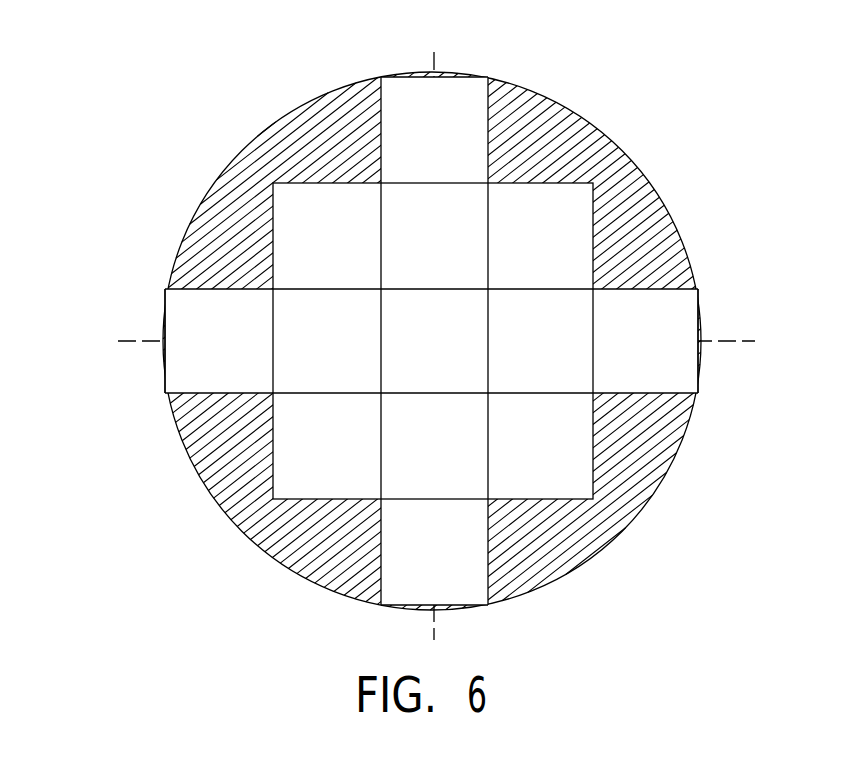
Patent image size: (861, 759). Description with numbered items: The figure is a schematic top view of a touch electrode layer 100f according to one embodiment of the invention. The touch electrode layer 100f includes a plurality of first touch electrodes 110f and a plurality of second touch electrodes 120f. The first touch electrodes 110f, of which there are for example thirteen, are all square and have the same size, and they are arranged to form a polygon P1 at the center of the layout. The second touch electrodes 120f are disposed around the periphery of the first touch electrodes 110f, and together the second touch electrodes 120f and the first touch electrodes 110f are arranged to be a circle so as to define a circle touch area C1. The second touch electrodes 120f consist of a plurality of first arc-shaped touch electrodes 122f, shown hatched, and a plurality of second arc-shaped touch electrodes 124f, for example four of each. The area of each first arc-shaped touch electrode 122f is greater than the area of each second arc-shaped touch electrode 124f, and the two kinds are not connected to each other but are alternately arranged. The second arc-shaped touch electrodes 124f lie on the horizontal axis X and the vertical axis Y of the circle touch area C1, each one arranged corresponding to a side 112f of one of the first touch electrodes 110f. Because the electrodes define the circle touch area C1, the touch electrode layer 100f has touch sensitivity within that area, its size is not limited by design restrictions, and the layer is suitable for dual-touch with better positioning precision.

The touch electrode layer 100f is at (416, 338).
The first touch electrodes 110f is at (660, 311).
The side 112f is at (161, 321).
The second touch electrodes 120f is at (392, 329).
The first arc-shaped touch electrodes 122f is at (393, 332).
The second arc-shaped touch electrodes 124f is at (462, 73).
The circle touch area C1 is at (230, 124).
The polygon P1 is at (350, 146).
The horizontal axis X is at (449, 341).
The vertical axis Y is at (443, 330).